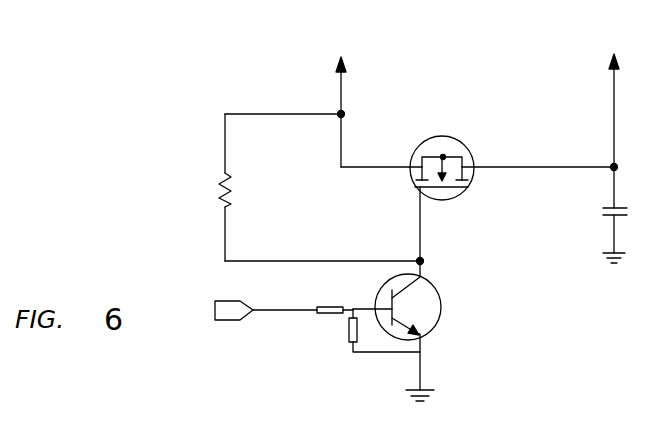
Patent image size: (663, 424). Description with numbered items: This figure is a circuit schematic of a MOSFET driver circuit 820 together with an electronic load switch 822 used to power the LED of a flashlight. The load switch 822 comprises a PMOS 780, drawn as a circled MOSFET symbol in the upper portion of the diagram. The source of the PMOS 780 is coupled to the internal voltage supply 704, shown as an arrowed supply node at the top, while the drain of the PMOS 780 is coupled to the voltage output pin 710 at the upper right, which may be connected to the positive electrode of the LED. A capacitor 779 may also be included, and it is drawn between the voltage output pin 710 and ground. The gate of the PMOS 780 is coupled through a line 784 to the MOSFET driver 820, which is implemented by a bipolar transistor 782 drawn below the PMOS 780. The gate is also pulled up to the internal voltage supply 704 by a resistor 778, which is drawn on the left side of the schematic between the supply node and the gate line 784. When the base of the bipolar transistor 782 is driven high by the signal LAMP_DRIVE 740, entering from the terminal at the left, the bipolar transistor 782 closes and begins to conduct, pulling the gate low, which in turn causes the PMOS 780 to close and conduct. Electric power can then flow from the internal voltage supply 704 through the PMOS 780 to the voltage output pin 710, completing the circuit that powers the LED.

The internal voltage supply 704 is at (341, 85).
The voltage output pin 710 is at (614, 80).
The signal LAMP_DRIVE 740 is at (232, 320).
The resistor 778 is at (222, 192).
The capacitor 779 is at (603, 210).
The PMOS 780 is at (466, 141).
The bipolar transistor 782 is at (437, 290).
The line 784 is at (420, 226).
The MOSFET driver circuit 820 is at (479, 328).
The load switch 822 is at (467, 86).